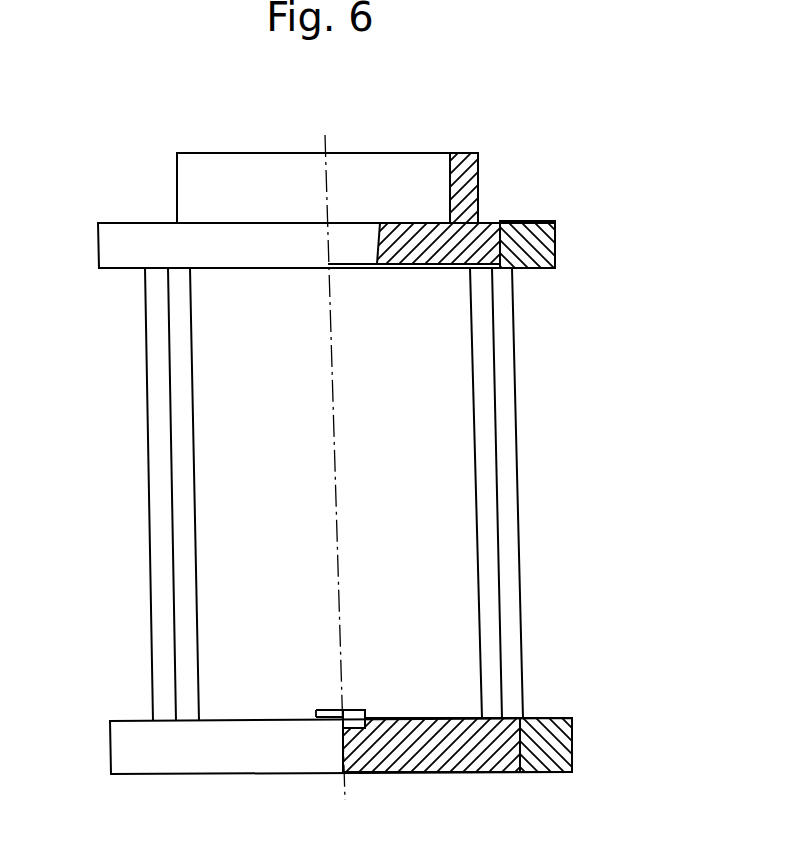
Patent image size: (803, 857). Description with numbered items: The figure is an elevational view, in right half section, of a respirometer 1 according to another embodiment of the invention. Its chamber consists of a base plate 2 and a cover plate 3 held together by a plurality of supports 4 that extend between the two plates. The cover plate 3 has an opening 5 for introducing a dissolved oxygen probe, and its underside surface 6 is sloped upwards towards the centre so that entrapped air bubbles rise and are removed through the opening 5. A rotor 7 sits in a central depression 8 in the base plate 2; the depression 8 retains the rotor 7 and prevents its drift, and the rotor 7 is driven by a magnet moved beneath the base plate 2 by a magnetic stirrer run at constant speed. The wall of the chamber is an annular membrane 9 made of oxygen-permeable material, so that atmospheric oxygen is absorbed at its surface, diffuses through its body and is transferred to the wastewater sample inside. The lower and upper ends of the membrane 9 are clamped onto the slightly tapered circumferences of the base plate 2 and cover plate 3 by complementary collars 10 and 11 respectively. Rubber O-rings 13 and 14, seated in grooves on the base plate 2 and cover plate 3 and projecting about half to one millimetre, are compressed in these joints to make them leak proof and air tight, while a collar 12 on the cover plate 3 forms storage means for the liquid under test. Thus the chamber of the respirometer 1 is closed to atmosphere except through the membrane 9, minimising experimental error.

The respirometer 1 is at (565, 163).
The base plate 2 is at (407, 772).
The cover plate 3 is at (483, 234).
The supports 4 is at (197, 523).
The opening 5 is at (350, 238).
The underside surface 6 is at (362, 268).
The rotor 7 is at (355, 710).
The central depression 8 is at (370, 715).
The annular membrane 9 is at (148, 525).
The complementary collar 10 is at (258, 752).
The complementary collar 11 is at (120, 247).
The collar 12 is at (465, 153).
The rubber O-ring 13 is at (510, 752).
The rubber O-ring 14 is at (503, 222).